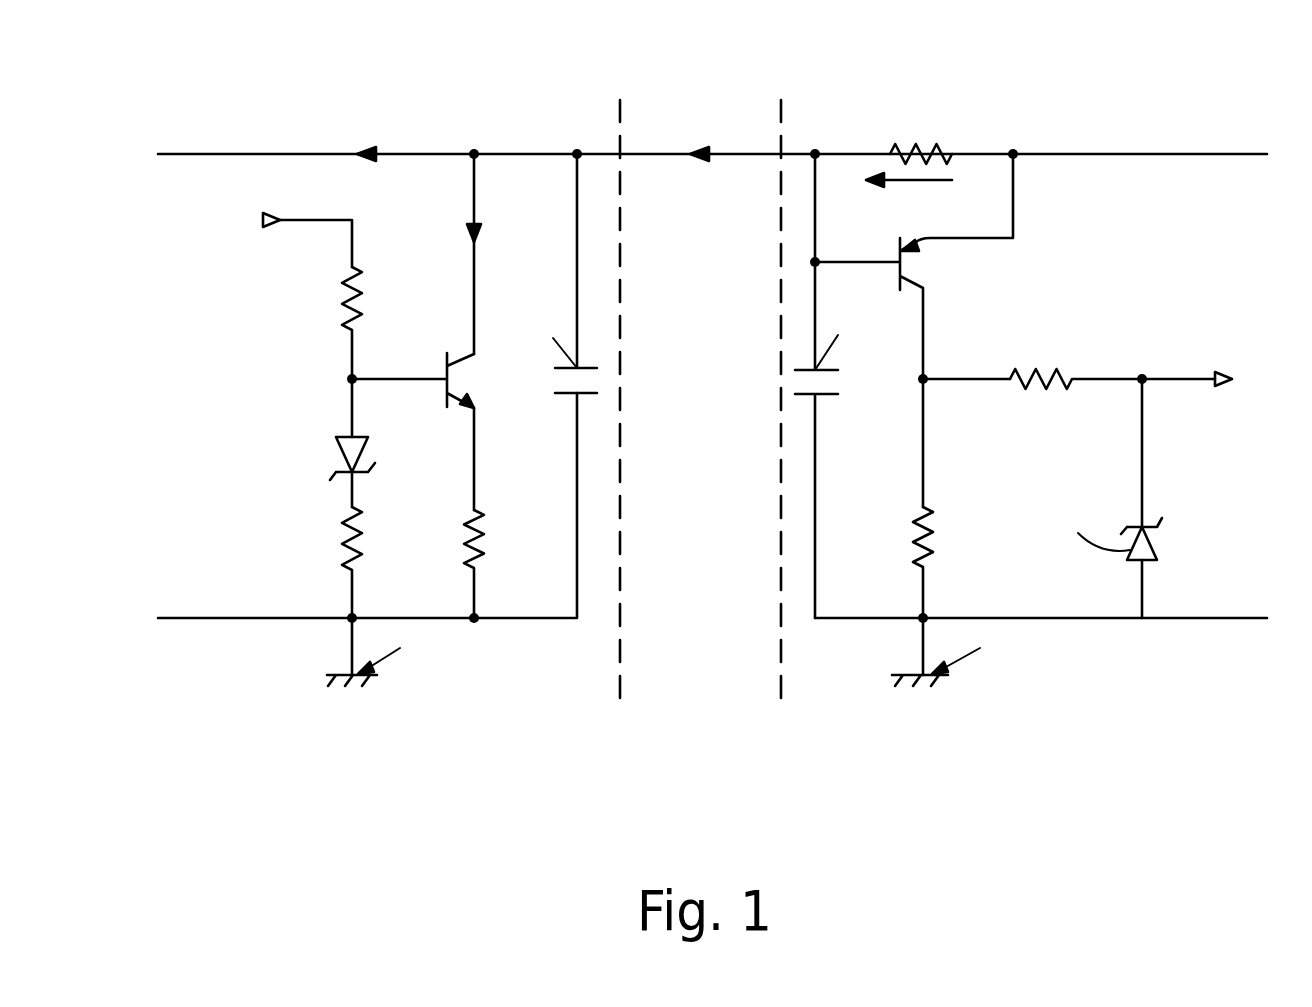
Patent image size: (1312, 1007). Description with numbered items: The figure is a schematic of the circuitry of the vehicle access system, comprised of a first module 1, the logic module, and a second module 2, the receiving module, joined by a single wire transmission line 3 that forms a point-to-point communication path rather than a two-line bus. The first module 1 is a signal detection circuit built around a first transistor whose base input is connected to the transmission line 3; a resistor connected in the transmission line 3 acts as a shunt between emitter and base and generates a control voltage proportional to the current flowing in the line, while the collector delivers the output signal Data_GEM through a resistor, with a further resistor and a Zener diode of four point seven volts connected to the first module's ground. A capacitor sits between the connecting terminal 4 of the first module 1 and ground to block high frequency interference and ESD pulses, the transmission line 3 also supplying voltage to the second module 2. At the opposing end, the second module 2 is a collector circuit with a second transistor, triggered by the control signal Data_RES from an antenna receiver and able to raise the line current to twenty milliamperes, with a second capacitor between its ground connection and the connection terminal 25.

The first module (logic module) 1 is at (1012, 88).
The second module (receiving module) 2 is at (449, 86).
The transmission line 3 is at (665, 155).
The connecting terminal 4 is at (781, 150).
The connection terminal 25 is at (620, 148).